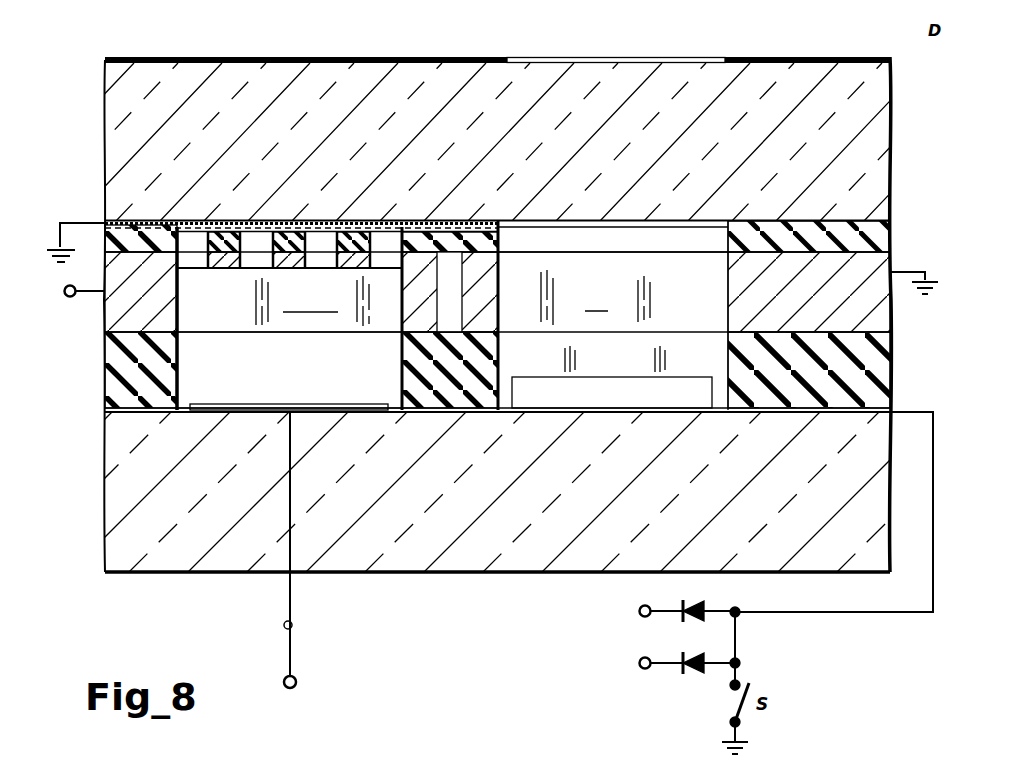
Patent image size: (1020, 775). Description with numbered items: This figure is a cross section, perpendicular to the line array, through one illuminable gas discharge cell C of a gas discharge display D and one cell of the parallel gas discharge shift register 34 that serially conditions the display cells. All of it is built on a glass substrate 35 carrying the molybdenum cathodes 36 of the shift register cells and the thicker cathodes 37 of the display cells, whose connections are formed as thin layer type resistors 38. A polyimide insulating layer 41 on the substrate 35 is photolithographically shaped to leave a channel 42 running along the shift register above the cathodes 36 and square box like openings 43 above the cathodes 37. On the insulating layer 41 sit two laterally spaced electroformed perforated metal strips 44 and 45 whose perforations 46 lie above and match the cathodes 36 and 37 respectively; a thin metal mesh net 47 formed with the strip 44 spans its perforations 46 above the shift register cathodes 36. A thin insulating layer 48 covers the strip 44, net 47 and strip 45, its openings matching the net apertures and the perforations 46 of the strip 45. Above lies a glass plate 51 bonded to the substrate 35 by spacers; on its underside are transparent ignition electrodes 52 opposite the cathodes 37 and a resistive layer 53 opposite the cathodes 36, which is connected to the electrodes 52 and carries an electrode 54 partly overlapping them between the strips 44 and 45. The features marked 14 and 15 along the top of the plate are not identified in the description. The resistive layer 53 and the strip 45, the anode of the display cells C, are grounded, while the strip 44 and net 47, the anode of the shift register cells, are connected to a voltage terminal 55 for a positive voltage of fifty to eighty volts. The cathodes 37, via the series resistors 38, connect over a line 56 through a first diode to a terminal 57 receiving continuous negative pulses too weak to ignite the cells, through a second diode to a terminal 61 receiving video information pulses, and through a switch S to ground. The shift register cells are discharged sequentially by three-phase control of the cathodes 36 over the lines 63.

The top electrode layer 14 is at (420, 58).
The window opening 15 is at (650, 62).
The gas discharge shift register 34 is at (96, 391).
The glass substrate 35 is at (170, 565).
The cathodes of the shift register cells 36 is at (342, 405).
The cathodes of the gas discharge cells 37 is at (615, 404).
The thin layer type resistors 38 is at (890, 400).
The insulating layer 41 is at (180, 363).
The channel 42 is at (200, 386).
The box like openings 43 is at (505, 368).
The perforated metal strip 44 is at (115, 318).
The perforated metal strip 45 is at (890, 310).
The perforations 46 is at (180, 321).
The metal mesh net 47 is at (232, 271).
The insulating layer 48 is at (890, 243).
The glass plate 51 is at (890, 193).
The transparent ignition electrodes 52 is at (678, 221).
The resistive layer 53 is at (228, 221).
The electrode 54 is at (325, 221).
The voltage terminal 55 is at (76, 300).
The line 56 is at (895, 610).
The terminal 57 is at (640, 611).
The terminal 61 is at (640, 665).
The lines 63 is at (296, 626).